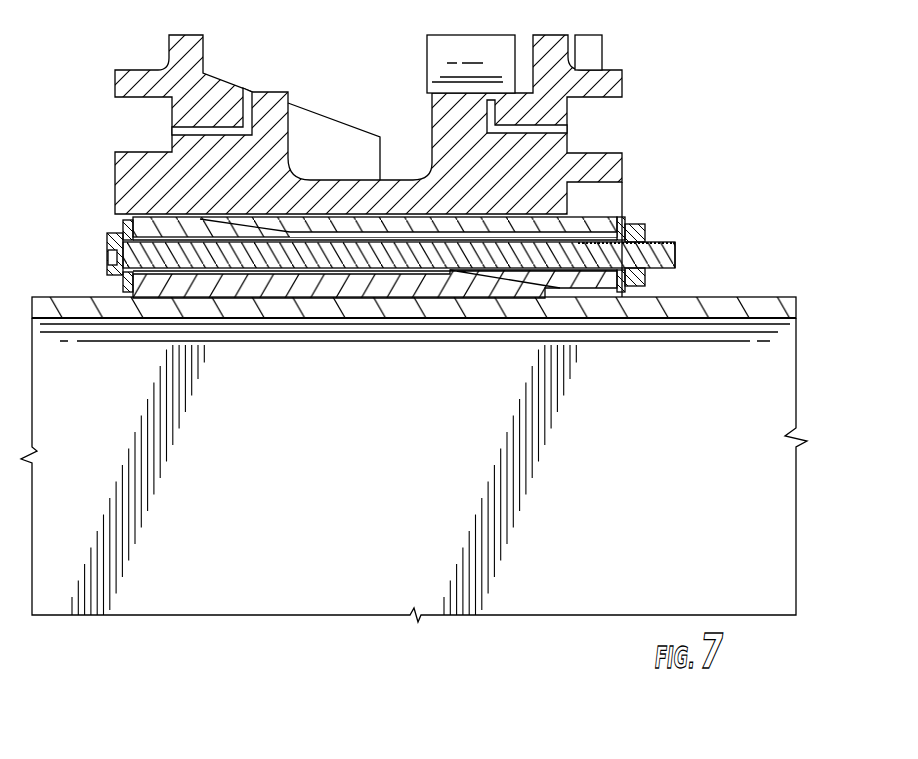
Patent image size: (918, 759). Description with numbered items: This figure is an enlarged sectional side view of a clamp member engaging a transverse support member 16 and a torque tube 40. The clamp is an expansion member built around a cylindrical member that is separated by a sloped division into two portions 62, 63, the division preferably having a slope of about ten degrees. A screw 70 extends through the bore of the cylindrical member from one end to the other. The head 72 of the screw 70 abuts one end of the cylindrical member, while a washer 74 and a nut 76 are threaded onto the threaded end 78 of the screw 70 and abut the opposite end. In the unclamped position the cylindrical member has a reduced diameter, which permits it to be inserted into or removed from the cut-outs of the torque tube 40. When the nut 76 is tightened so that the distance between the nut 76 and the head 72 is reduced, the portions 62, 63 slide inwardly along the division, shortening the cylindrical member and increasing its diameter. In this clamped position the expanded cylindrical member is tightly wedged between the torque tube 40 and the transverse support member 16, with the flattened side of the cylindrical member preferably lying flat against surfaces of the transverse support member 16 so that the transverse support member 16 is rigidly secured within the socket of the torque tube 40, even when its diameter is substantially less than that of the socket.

The transverse support member 16 is at (76, 297).
The torque tube 40 is at (557, 170).
The portion 62 is at (593, 218).
The portion 63 is at (343, 290).
The screw 70 is at (270, 256).
The head 72 is at (107, 248).
The washer 74 is at (620, 216).
The nut 76 is at (637, 225).
The threaded end 78 is at (675, 244).